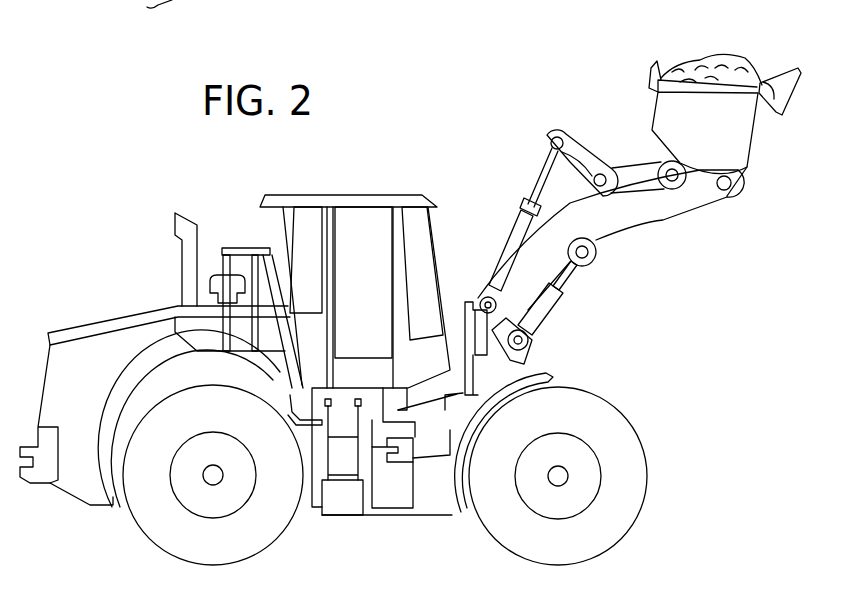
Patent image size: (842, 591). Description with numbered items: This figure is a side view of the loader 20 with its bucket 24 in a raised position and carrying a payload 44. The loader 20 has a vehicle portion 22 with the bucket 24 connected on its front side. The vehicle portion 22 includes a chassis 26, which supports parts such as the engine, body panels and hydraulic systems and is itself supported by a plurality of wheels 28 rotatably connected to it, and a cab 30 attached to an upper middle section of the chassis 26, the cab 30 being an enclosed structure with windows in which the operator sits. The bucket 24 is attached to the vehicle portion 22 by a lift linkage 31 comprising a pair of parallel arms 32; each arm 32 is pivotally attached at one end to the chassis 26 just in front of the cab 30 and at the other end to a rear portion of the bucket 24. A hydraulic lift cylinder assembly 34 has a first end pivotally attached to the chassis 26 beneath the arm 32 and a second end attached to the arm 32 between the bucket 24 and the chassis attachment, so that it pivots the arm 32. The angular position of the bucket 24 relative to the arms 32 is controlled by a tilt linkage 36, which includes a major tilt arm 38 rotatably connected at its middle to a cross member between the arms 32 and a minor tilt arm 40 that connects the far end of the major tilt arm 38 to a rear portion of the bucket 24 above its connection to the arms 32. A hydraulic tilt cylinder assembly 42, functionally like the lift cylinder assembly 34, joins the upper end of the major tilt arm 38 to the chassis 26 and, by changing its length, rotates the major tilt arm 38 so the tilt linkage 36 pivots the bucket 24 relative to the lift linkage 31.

The loader 20 is at (436, 176).
The vehicle portion 22 is at (128, 290).
The bucket 24 is at (681, 132).
The chassis 26 is at (495, 376).
The wheels 28 is at (288, 479).
The cab 30 is at (375, 252).
The lift linkage 31 is at (636, 291).
The arm 32 is at (622, 227).
The hydraulic lift cylinder assembly 34 is at (555, 313).
The tilt linkage 36 is at (604, 138).
The major tilt arm 38 is at (552, 148).
The minor tilt arm 40 is at (660, 183).
The hydraulic tilt cylinder assembly 42 is at (520, 232).
The payload 44 is at (676, 48).